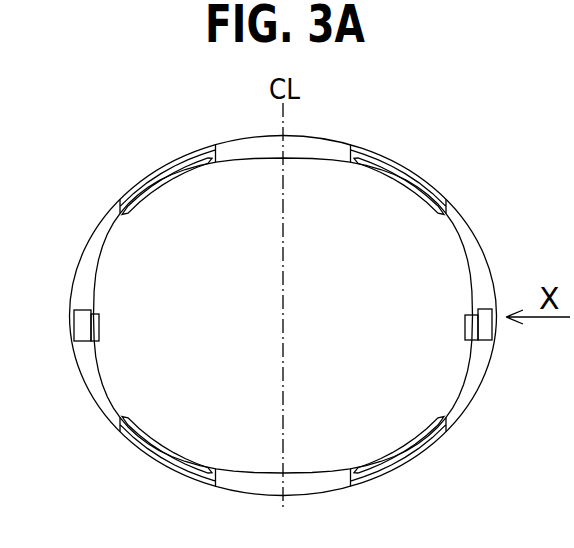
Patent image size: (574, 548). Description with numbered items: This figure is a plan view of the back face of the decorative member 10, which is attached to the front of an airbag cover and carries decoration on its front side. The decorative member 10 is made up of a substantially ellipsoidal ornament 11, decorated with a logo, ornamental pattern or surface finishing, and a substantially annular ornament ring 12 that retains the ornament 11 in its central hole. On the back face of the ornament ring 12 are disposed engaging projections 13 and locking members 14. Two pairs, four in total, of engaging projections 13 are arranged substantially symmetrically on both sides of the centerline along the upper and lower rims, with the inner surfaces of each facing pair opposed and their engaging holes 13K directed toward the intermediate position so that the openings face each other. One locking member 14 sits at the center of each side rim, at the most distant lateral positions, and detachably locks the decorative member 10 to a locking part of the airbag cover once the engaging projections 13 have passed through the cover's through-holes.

The decorative member 10 is at (99, 195).
The ornament 11 is at (118, 273).
The ornament ring 12 is at (98, 233).
The engaging projection 13 is at (213, 146).
The engaging hole 13K is at (161, 170).
The locking member 14 is at (82, 327).